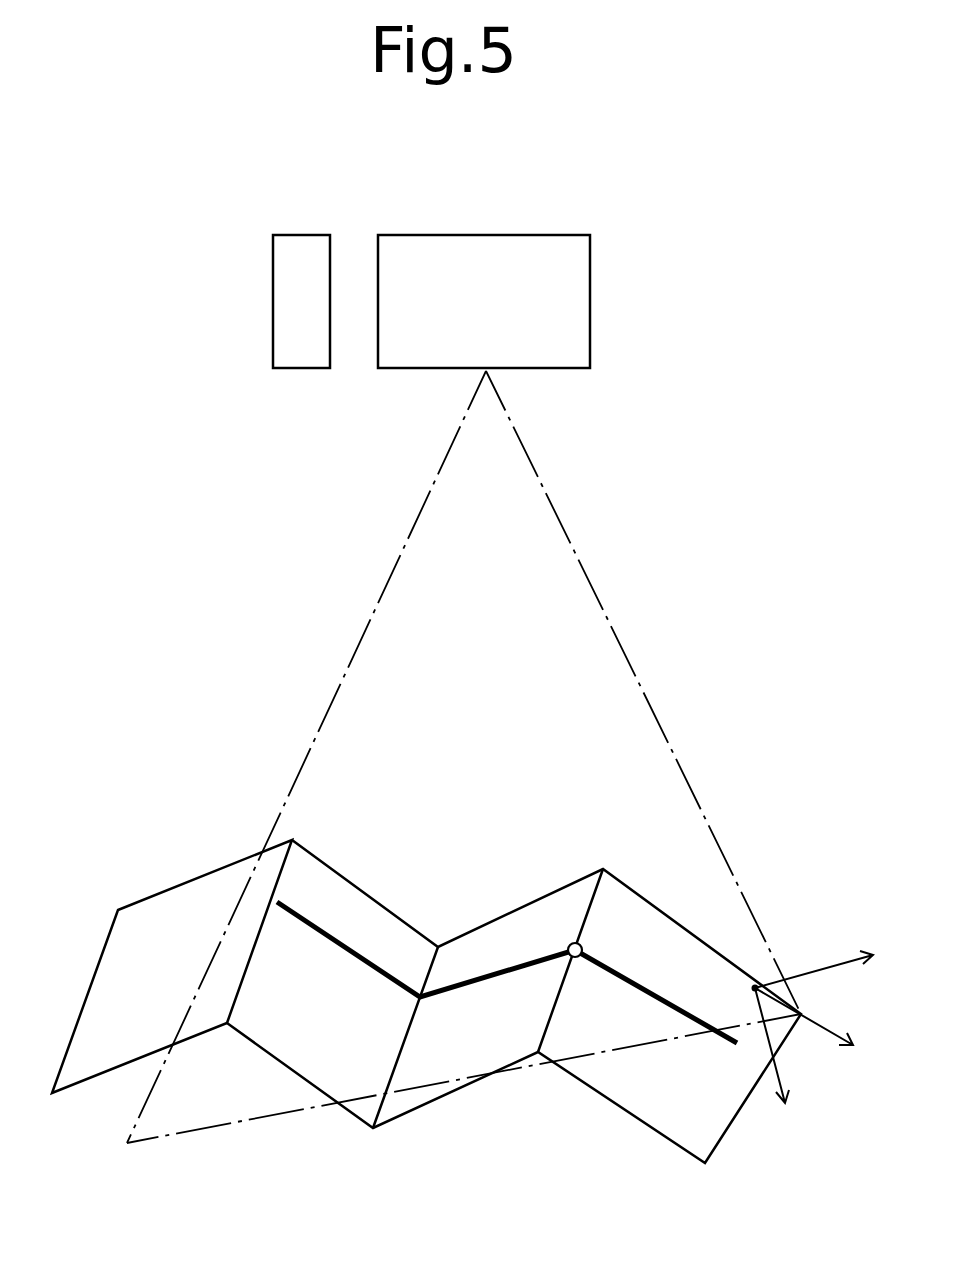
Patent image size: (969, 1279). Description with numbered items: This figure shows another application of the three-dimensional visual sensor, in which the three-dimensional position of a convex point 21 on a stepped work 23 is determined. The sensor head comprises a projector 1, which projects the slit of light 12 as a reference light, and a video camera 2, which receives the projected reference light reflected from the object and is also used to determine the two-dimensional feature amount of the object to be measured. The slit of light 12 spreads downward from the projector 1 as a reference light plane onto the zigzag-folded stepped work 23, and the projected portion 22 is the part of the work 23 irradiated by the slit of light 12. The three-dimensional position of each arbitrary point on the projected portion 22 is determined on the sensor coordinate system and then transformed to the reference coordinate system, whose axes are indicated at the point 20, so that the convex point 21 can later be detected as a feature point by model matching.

The projector 1 is at (413, 245).
The video camera 2 is at (286, 243).
The slit of light 12 is at (609, 620).
The measurement point with local coordinate system 20 is at (764, 968).
The convex point 21 is at (583, 947).
The projected portion 22 is at (397, 979).
The stepped work 23 is at (148, 908).